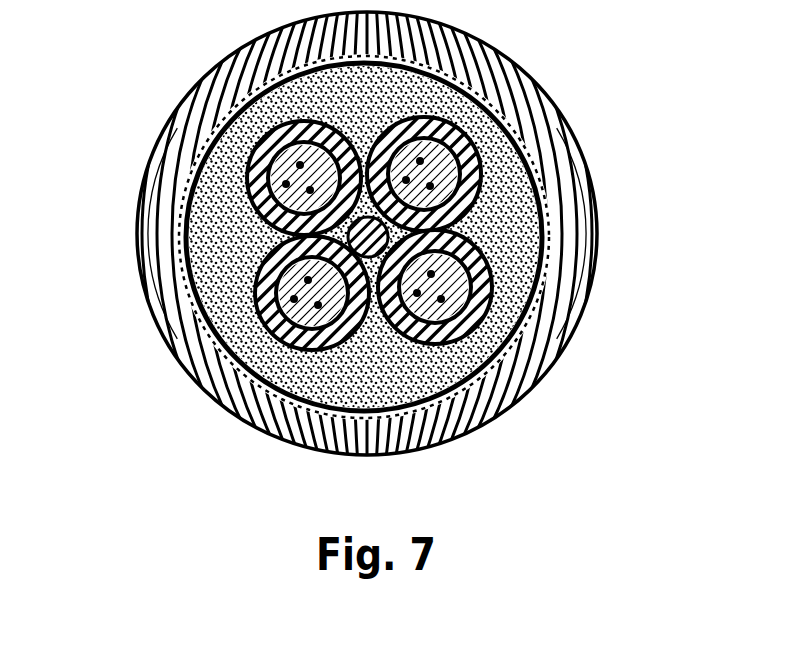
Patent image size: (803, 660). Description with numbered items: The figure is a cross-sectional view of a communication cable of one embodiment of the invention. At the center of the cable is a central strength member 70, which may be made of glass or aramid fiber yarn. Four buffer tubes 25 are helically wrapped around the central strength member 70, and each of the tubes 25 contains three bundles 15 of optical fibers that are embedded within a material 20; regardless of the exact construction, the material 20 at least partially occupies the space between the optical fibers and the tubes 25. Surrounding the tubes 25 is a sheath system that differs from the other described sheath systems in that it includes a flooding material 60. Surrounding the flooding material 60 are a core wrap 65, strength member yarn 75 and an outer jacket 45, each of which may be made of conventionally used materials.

The bundles of optical fibers 15 is at (455, 299).
The material 20 is at (497, 112).
The buffer tubes 25 is at (282, 165).
The jacket 45 is at (229, 73).
The flooding material 60 is at (457, 45).
The core wrap 65 is at (537, 170).
The central strength member 70 is at (350, 243).
The strength member yarn 75 is at (547, 227).